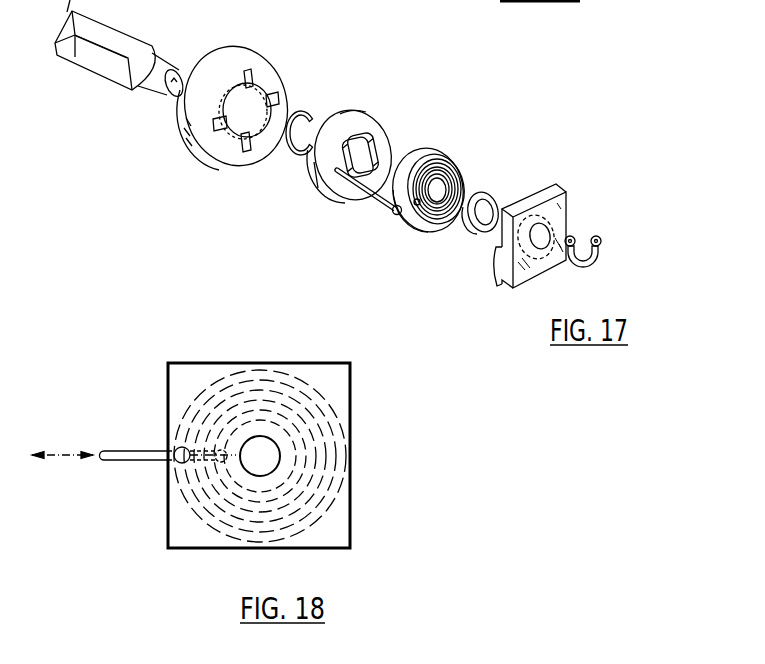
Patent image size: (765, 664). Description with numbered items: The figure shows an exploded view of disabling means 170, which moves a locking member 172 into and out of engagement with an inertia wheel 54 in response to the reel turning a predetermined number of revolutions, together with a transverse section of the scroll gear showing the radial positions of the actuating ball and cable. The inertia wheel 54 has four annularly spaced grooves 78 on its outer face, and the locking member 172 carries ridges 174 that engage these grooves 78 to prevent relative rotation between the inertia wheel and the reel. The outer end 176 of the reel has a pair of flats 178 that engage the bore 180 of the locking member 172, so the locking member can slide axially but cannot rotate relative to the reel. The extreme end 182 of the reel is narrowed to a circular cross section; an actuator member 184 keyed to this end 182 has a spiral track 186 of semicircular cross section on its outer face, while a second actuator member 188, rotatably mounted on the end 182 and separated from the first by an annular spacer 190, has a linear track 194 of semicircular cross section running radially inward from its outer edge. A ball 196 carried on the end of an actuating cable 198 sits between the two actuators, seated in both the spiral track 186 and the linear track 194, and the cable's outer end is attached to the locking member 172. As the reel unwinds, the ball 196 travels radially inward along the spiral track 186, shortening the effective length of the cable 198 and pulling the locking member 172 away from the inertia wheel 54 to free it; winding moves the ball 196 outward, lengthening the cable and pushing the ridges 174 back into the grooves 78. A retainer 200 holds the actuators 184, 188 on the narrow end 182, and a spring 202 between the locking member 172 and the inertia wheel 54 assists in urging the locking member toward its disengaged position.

In FIG. 17, the inertia wheel 54 is at (240, 108).
In FIG. 17, the grooves 78 is at (215, 124).
In FIG. 17, the disabling means 170 is at (495, 114).
In FIG. 17, the locking member 172 is at (366, 112).
In FIG. 17, the ridges 174 is at (362, 115).
In FIG. 17, the outer end of the reel 176 is at (118, 77).
In FIG. 17, the flats 178 is at (157, 50).
In FIG. 17, the bore 180 is at (465, 178).
In FIG. 17, the extreme end of the reel 182 is at (170, 92).
In FIG. 18, the extreme end of the reel 182 is at (271, 457).
In FIG. 17, the actuator member 184 is at (437, 155).
In FIG. 18, the actuator member 184 is at (315, 388).
In FIG. 17, the spiral track 186 is at (457, 178).
In FIG. 18, the spiral track 186 is at (231, 392).
In FIG. 17, the second actuator member 188 is at (545, 237).
In FIG. 17, the annular spacer 190 is at (474, 231).
In FIG. 17, the linear track 194 is at (495, 252).
In FIG. 17, the ball 196 is at (396, 214).
In FIG. 18, the ball 196 is at (172, 450).
In FIG. 17, the actuating cable 198 is at (373, 198).
In FIG. 18, the actuating cable 198 is at (130, 462).
In FIG. 17, the retainer 200 is at (603, 253).
In FIG. 17, the spring 202 is at (310, 110).